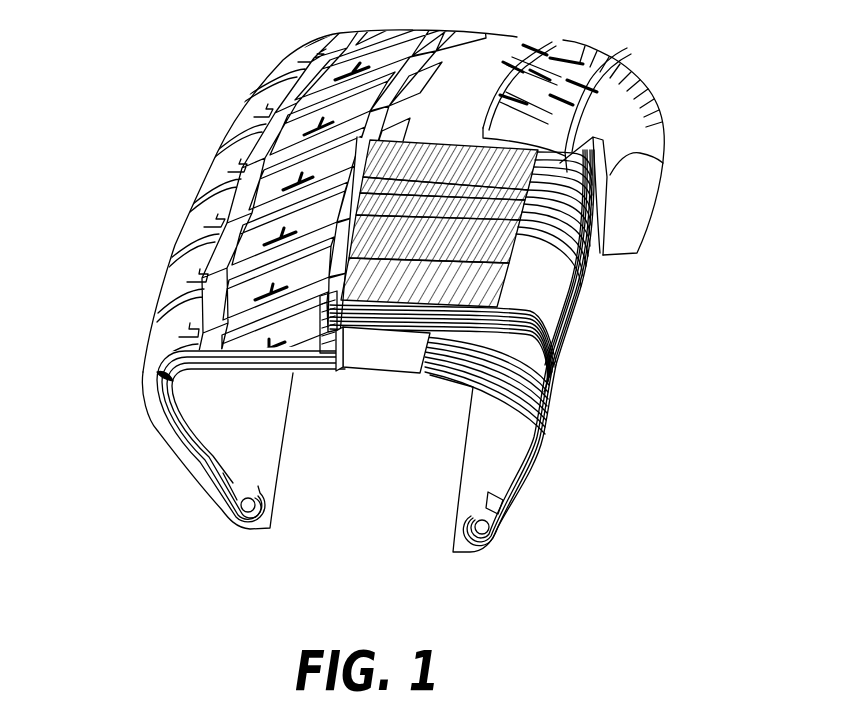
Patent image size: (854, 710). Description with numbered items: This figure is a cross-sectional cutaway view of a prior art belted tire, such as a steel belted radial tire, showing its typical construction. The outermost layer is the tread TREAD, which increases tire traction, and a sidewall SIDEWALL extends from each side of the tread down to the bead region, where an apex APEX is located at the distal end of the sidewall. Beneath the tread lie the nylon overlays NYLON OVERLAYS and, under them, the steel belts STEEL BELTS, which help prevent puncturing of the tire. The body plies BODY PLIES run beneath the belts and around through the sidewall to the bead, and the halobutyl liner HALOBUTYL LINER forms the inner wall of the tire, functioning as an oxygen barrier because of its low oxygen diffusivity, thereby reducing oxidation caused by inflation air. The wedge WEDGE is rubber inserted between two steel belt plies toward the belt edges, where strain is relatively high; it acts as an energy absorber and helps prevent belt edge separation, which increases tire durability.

The tread TREAD is at (250, 97).
The sidewall SIDEWALL is at (637, 183).
The nylon overlays NYLON OVERLAYS is at (530, 170).
The steel belts STEEL BELTS is at (478, 243).
The body plies BODY PLIES is at (543, 443).
The apex APEX is at (493, 517).
The halobutyl inner liner HALOBUTYL LINER is at (387, 353).
The wedge WEDGE is at (163, 376).